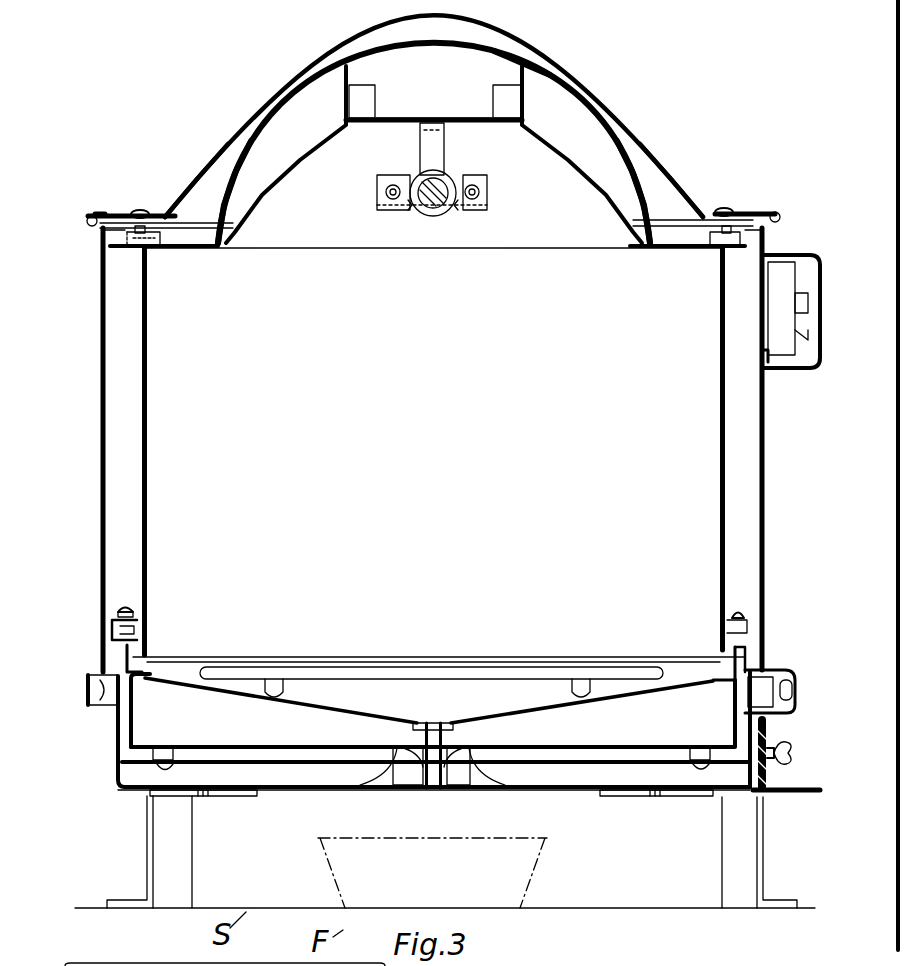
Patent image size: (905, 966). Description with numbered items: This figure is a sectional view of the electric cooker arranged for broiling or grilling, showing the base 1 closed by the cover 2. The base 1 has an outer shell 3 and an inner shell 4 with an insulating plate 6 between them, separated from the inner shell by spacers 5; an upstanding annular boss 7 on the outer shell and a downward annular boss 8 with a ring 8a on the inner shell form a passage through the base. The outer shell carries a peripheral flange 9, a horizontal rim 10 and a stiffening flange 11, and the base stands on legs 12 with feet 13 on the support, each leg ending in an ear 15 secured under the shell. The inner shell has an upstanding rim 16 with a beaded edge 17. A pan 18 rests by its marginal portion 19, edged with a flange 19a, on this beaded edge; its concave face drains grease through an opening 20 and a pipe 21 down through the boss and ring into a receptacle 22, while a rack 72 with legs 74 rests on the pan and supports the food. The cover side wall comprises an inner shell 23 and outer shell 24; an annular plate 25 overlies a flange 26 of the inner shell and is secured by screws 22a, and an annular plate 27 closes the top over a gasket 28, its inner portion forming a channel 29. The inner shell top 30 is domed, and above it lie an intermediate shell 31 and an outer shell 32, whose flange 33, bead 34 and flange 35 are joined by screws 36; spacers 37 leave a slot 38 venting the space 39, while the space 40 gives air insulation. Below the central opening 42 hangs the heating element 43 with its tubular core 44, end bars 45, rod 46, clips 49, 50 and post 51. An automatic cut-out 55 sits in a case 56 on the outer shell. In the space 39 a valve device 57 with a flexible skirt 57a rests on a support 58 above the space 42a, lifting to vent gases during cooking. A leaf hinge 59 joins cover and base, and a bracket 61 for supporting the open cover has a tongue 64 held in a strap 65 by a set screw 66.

The base 1 is at (100, 800).
The cover 2 is at (92, 482).
The outer shell 3 is at (297, 793).
The inner shell 4 is at (153, 765).
The spacers 5 is at (170, 762).
The insulation 6 is at (266, 766).
The annular boss 7 is at (378, 782).
The annular boss 8 is at (452, 768).
The ring 8a is at (402, 770).
The peripheral flange 9 is at (116, 745).
The rim 10 is at (98, 705).
The flange 11 is at (86, 692).
The legs 12 is at (172, 847).
The foot 13 is at (118, 898).
The ear 15 is at (245, 797).
The rim 16 is at (128, 704).
The beaded edge 17 is at (125, 677).
The pan 18 is at (355, 713).
The marginal portion 19 is at (730, 670).
The flange 19a is at (742, 648).
The opening 20 is at (430, 722).
The grease delivering pipe 21 is at (444, 748).
The receptacle 22 is at (432, 873).
The screws 22a is at (132, 610).
The inner shell 23 is at (148, 445).
The outer shell 24 is at (101, 388).
The annular plate 25 is at (125, 605).
The flange 26 is at (138, 632).
The annular plate 27 is at (112, 250).
The gasket 28 is at (130, 254).
The channel 29 is at (110, 237).
The top of the inner shell 30 is at (250, 222).
The intermediate shell 31 is at (234, 172).
The outer shell 32 is at (230, 138).
The horizontal flange 33 is at (110, 212).
The annular bead 34 is at (90, 220).
The horizontal flange 35 is at (104, 214).
The screws 36 is at (141, 210).
The spacers 37 is at (167, 228).
The slot 38 is at (643, 222).
The space 39 is at (618, 158).
The space 40 is at (326, 64).
The central opening 42 is at (408, 120).
The space 42a is at (452, 100).
The heating element 43 is at (364, 188).
The tubular core 44 is at (424, 180).
The bars 45 is at (485, 180).
The metal rod 46 is at (427, 203).
The clip 49 is at (410, 212).
The clip 50 is at (458, 214).
The post 51 is at (446, 150).
The automatic cut-out 55 is at (775, 282).
The case 56 is at (790, 368).
The automatic valve device 57 is at (514, 90).
The skirt portion 57a is at (598, 108).
The support 58 is at (455, 63).
The leaf hinge 59 is at (778, 677).
The bracket 61 is at (800, 787).
The tongue 64 is at (747, 727).
The strap 65 is at (768, 731).
The set screw 66 is at (789, 753).
The rack 72 is at (303, 672).
The legs 74 is at (285, 688).